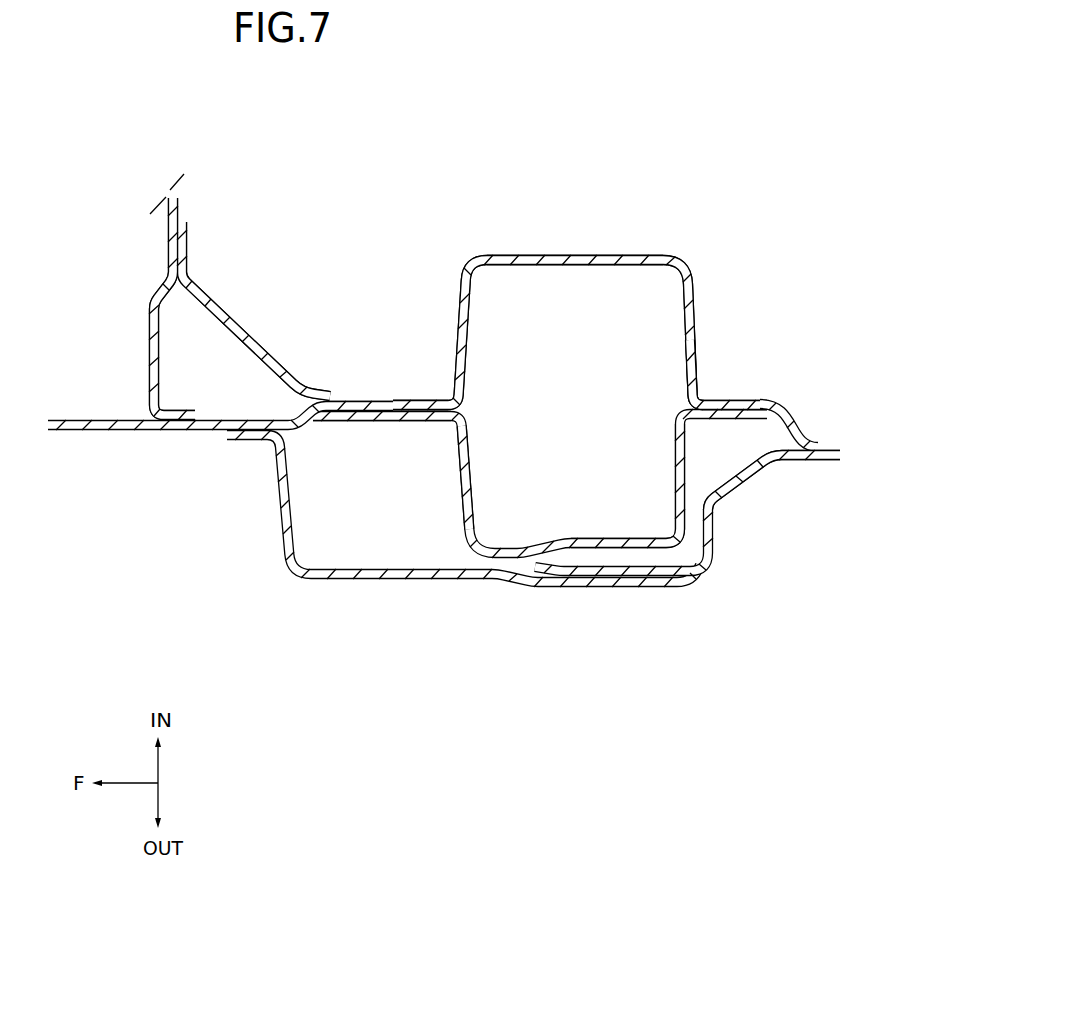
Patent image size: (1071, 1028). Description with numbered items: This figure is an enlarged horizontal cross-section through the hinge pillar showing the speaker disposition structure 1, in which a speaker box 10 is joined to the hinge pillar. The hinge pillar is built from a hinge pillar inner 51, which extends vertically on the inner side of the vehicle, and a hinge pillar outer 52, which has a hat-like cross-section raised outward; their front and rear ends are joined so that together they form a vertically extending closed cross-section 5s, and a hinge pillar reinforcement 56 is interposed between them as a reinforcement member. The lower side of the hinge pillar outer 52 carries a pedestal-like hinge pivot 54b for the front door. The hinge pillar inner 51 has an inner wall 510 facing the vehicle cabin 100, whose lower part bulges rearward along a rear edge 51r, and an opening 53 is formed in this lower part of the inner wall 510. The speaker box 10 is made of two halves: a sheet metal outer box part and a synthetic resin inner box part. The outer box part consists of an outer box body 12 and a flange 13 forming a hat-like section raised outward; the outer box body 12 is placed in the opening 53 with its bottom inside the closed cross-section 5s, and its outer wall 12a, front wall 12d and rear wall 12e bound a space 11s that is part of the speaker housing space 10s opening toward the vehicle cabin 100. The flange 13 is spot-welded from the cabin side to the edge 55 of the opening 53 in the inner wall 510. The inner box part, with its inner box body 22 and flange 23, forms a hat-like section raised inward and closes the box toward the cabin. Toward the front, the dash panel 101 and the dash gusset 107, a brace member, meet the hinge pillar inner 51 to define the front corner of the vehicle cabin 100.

The speaker disposition structure 1 is at (697, 242).
The speaker box 10 is at (700, 306).
The inner box body 22 is at (568, 255).
The flange 23 is at (408, 400).
The opening 53 is at (670, 397).
The speaker housing space 10s is at (587, 418).
The space inside the outer box part 11s is at (587, 465).
The closed cross-section 5s is at (350, 511).
The outer box body 12 is at (472, 512).
The flange 13 is at (413, 422).
The front wall 12d is at (468, 481).
The outer wall 12a is at (611, 548).
The rear wall 12e is at (688, 465).
The hinge pillar reinforcement 56 is at (641, 546).
The hinge pillar inner 51 is at (119, 431).
The inner wall of the hinge pillar 510 is at (380, 406).
The rear edge 51r is at (840, 450).
The hinge pillar outer 52 is at (398, 580).
The hinge pivot 54b is at (637, 577).
The edge 55 is at (785, 430).
The vehicle cabin 100 is at (470, 181).
The dash panel 101 is at (150, 360).
The dash gusset 107 is at (243, 348).